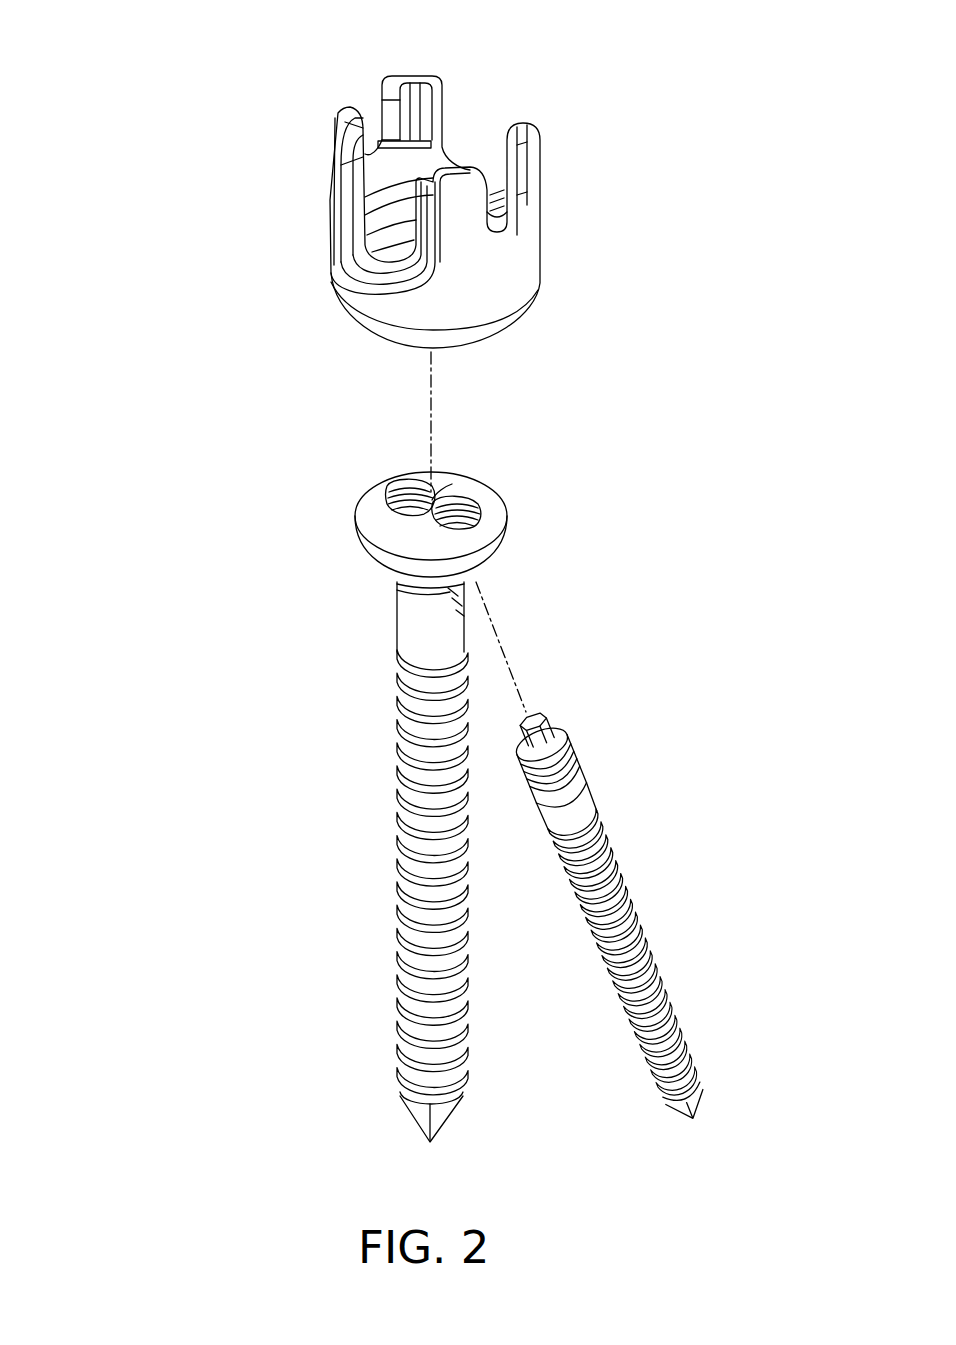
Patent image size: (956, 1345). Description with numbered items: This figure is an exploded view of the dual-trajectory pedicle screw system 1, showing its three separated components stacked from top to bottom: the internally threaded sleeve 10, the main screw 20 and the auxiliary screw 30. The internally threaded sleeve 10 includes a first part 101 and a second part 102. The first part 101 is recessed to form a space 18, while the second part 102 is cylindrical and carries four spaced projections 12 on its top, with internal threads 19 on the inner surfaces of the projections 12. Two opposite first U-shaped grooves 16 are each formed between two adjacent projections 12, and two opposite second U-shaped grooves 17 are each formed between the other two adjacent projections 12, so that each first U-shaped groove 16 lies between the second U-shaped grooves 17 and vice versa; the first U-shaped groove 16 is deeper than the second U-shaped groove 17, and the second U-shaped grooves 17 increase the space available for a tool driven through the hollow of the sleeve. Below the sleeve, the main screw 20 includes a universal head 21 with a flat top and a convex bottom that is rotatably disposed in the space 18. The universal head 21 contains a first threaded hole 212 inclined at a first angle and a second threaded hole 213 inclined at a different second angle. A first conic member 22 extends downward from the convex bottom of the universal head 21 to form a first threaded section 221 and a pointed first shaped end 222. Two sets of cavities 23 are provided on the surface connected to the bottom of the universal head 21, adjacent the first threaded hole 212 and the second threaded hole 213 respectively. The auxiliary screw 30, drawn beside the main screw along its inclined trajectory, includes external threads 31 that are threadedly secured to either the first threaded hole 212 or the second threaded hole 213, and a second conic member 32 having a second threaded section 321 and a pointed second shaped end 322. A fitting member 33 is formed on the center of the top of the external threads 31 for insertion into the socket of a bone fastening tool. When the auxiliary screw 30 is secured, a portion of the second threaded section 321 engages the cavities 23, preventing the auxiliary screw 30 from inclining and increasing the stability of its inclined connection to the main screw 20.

The dual-trajectory pedicle screw system 1 is at (103, 77).
The internally threaded sleeve 10 is at (552, 265).
The first part 101 is at (505, 323).
The second part 102 is at (333, 265).
The projections 12 is at (463, 184).
The first U-shaped grooves 16 is at (473, 116).
The second U-shaped grooves 17 is at (370, 98).
The space 18 is at (403, 244).
The internal threads 19 is at (390, 192).
The main screw 20 is at (373, 797).
The universal head 21 is at (465, 535).
The first threaded hole 212 is at (452, 492).
The second threaded hole 213 is at (415, 478).
The first conic member 22 is at (417, 621).
The cavities 23 is at (396, 584).
The first threaded section 221 is at (398, 885).
The first shaped end 222 is at (420, 1122).
The auxiliary screw 30 is at (642, 870).
The external threads 31 is at (556, 752).
The second conic member 32 is at (566, 802).
The second threaded section 321 is at (640, 940).
The second shaped end 322 is at (700, 1100).
The fitting member 33 is at (540, 725).